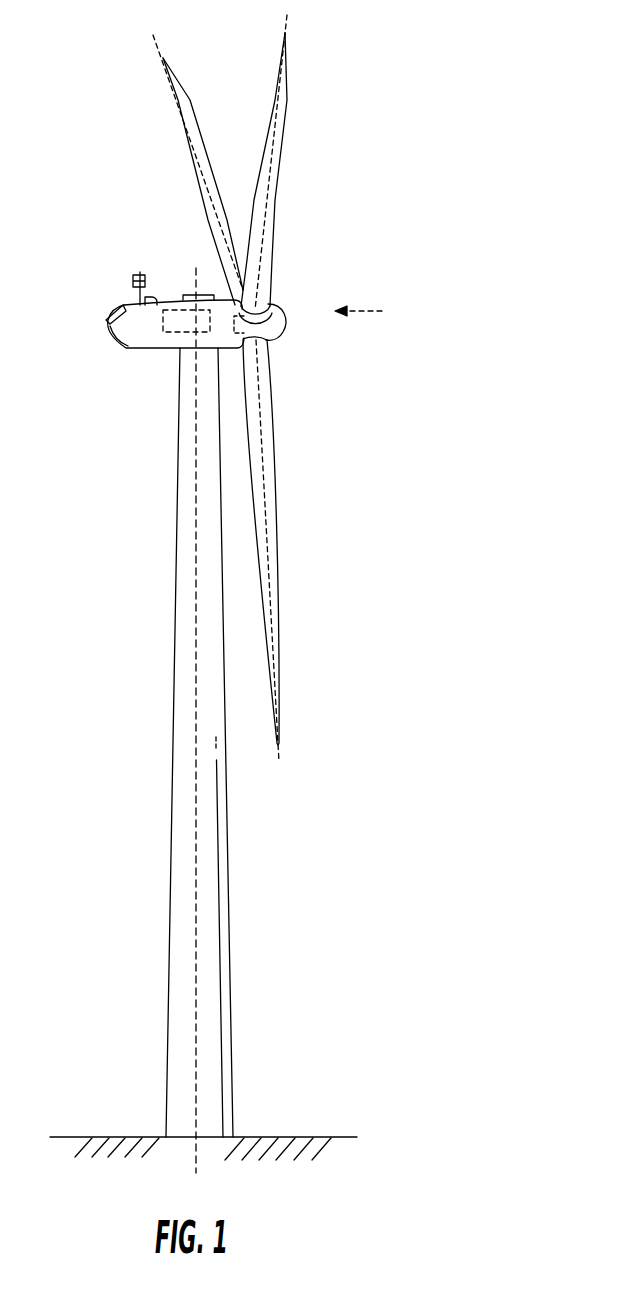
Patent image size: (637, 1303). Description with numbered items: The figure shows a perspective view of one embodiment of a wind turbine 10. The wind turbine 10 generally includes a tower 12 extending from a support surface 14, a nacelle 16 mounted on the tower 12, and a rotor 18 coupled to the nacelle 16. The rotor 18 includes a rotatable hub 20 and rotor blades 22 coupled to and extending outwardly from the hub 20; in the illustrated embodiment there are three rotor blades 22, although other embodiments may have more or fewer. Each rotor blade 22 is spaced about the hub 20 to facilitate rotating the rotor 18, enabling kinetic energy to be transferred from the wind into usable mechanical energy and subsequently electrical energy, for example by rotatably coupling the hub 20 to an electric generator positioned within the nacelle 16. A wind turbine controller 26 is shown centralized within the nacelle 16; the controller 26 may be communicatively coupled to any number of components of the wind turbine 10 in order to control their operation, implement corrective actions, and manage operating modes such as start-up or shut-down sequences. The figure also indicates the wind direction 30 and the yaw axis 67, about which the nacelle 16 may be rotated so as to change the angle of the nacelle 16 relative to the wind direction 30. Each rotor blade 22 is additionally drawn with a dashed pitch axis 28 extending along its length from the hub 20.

The wind turbine 10 is at (411, 104).
The tower 12 is at (185, 807).
The support surface 14 is at (122, 1137).
The nacelle 16 is at (148, 349).
The rotor 18 is at (294, 294).
The rotatable hub 20 is at (280, 330).
The rotor blade 22 is at (263, 192).
The wind turbine controller 26 is at (178, 294).
The pitch axis 28 is at (179, 125).
The wind direction 30 is at (374, 311).
The yaw axis 67 is at (194, 548).